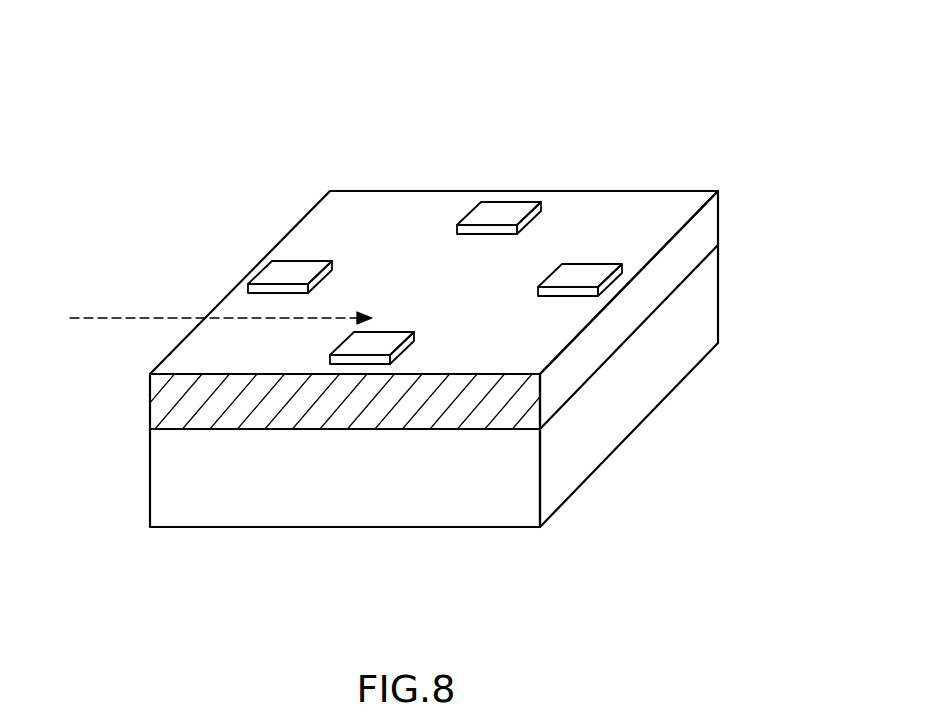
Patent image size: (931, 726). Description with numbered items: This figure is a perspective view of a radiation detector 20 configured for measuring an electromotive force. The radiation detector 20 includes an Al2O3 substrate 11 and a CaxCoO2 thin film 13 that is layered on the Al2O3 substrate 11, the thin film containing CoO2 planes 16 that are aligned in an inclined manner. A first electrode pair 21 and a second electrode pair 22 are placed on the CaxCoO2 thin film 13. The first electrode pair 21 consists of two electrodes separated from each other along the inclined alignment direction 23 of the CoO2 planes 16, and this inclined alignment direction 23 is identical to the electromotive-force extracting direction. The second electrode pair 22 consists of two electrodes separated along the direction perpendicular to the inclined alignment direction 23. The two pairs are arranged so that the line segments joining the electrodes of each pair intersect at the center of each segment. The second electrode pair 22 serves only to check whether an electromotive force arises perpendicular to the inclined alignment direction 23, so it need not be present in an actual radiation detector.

The Al2O3 substrate 11 is at (363, 485).
The CaxCoO2 thin film 13 is at (330, 215).
The CoO2 planes 16 is at (197, 408).
The radiation detector 20 is at (702, 98).
The first electrode pair 21 is at (573, 270).
The second electrode pair 22 is at (375, 340).
The inclined alignment direction 23 is at (203, 321).